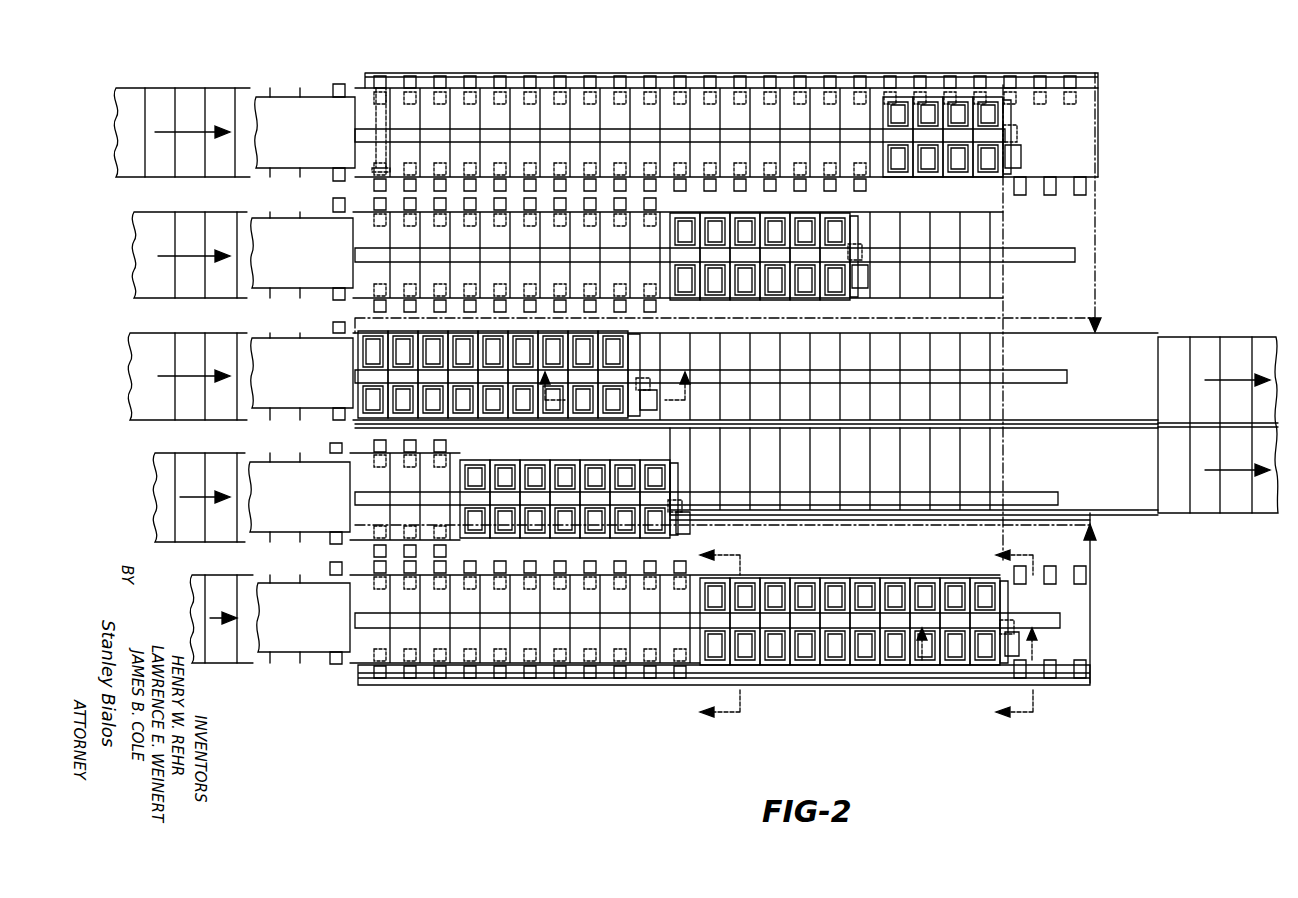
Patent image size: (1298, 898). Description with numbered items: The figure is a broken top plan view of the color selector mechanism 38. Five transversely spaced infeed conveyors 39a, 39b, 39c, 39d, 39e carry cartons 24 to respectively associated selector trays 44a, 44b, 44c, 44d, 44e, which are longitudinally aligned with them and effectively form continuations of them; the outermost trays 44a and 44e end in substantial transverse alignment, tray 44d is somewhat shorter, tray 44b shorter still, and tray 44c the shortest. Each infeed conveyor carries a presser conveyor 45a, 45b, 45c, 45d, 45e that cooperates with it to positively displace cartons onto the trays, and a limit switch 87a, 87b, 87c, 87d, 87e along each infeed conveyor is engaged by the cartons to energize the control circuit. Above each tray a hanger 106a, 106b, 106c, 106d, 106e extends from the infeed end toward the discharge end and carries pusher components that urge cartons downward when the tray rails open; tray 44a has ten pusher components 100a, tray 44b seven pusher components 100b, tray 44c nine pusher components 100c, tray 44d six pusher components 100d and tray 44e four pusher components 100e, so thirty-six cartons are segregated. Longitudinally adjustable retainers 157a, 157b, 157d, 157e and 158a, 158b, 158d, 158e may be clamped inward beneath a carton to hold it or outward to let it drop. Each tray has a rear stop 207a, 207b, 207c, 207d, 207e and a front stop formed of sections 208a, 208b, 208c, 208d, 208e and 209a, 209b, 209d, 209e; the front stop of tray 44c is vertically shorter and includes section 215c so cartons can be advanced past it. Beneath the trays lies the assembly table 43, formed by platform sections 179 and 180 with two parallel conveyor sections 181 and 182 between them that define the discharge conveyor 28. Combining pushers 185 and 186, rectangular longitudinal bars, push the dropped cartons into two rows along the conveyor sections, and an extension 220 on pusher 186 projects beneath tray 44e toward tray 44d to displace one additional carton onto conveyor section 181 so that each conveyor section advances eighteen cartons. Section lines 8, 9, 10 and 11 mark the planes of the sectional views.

The section line 8- 8 is at (720, 634).
The section line 9- 9 is at (1014, 634).
The section line 10- 10 is at (987, 638).
The section line 11- 11 is at (623, 385).
The carton 24 is at (239, 167).
The discharge conveyor 28 is at (1243, 330).
The color selector mechanism 38 is at (508, 697).
The infeed conveyor 39a is at (188, 572).
The infeed conveyor 39b is at (158, 452).
The infeed conveyor 39c is at (195, 318).
The infeed conveyor 39d is at (140, 214).
The infeed conveyor 39e is at (190, 66).
The assembly table 43 is at (1082, 562).
The selector tray 44a is at (800, 576).
The selector tray 44b is at (668, 457).
The selector tray 44c is at (634, 332).
The selector tray 44d is at (770, 310).
The selector tray 44e is at (925, 90).
The presser conveyor 45a is at (303, 613).
The presser conveyor 45b is at (299, 493).
The presser conveyor 45c is at (302, 371).
The presser conveyor 45d is at (302, 249).
The presser conveyor 45e is at (305, 132).
The limit switch 87a is at (1014, 638).
The limit switch 87b is at (678, 533).
The limit switch 87c is at (648, 412).
The limit switch 87d is at (868, 284).
The limit switch 87e is at (1022, 156).
The pusher component 100a is at (956, 584).
The pusher component 100b is at (598, 488).
The pusher component 100c is at (526, 369).
The pusher component 100d is at (797, 226).
The pusher component 100e is at (972, 115).
The hanger 106a is at (1060, 624).
The hanger 106b is at (1050, 503).
The hanger 106c is at (1050, 374).
The hanger 106d is at (1068, 258).
The hanger 106e is at (353, 134).
The retainer 157a is at (630, 682).
The retainer 157b is at (371, 549).
The retainer 157d is at (371, 306).
The retainer 157e is at (618, 180).
The retainer 158a is at (586, 574).
The retainer 158b is at (371, 449).
The retainer 158d is at (371, 204).
The retainer 158e is at (605, 76).
The platform section 179 is at (1094, 650).
The platform section 180 is at (1079, 78).
The conveyor section 181 is at (1120, 518).
The conveyor section 182 is at (1132, 330).
The combining pusher 185 is at (1073, 514).
The combining pusher 186 is at (744, 88).
The rear stop 207a is at (715, 662).
The rear stop 207b is at (430, 516).
The rear stop 207c is at (356, 382).
The rear stop 207d is at (668, 244).
The rear stop 207e is at (882, 118).
The front stop section 208a is at (1007, 627).
The front stop section 208b is at (675, 506).
The front stop section 208c is at (643, 384).
The front stop section 208d is at (863, 273).
The front stop section 208e is at (1016, 136).
The front stop section 209a is at (1004, 622).
The front stop section 209b is at (676, 482).
The front stop section 209d is at (858, 239).
The front stop section 209e is at (1012, 117).
The front stop section 215c is at (642, 358).
The extension 220 is at (382, 88).